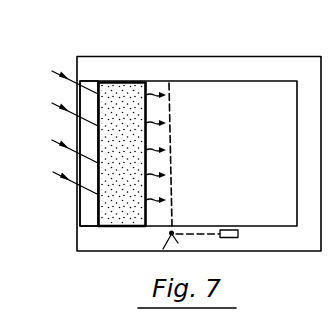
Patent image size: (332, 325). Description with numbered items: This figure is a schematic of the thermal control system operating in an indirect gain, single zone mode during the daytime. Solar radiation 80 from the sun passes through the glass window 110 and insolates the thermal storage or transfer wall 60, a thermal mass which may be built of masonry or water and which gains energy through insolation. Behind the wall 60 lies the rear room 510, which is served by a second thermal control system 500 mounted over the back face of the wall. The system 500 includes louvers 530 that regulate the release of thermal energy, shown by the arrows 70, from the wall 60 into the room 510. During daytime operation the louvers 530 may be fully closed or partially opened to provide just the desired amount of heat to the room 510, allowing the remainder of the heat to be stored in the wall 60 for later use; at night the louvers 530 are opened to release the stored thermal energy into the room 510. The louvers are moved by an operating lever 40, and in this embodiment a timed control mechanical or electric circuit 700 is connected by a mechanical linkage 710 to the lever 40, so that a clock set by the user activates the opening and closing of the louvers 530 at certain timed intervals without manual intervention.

The second thermal control system 500 is at (180, 70).
The rear room 510 is at (248, 182).
The louvers 530 is at (174, 123).
The thermal energy arrows 70 is at (152, 94).
The solar radiation 80 is at (52, 104).
The window 110 is at (82, 208).
The thermal storage or transfer wall 60 is at (112, 213).
The operating lever 40 is at (163, 249).
The timed control circuit 700 is at (230, 238).
The mechanical linkage 710 is at (195, 235).